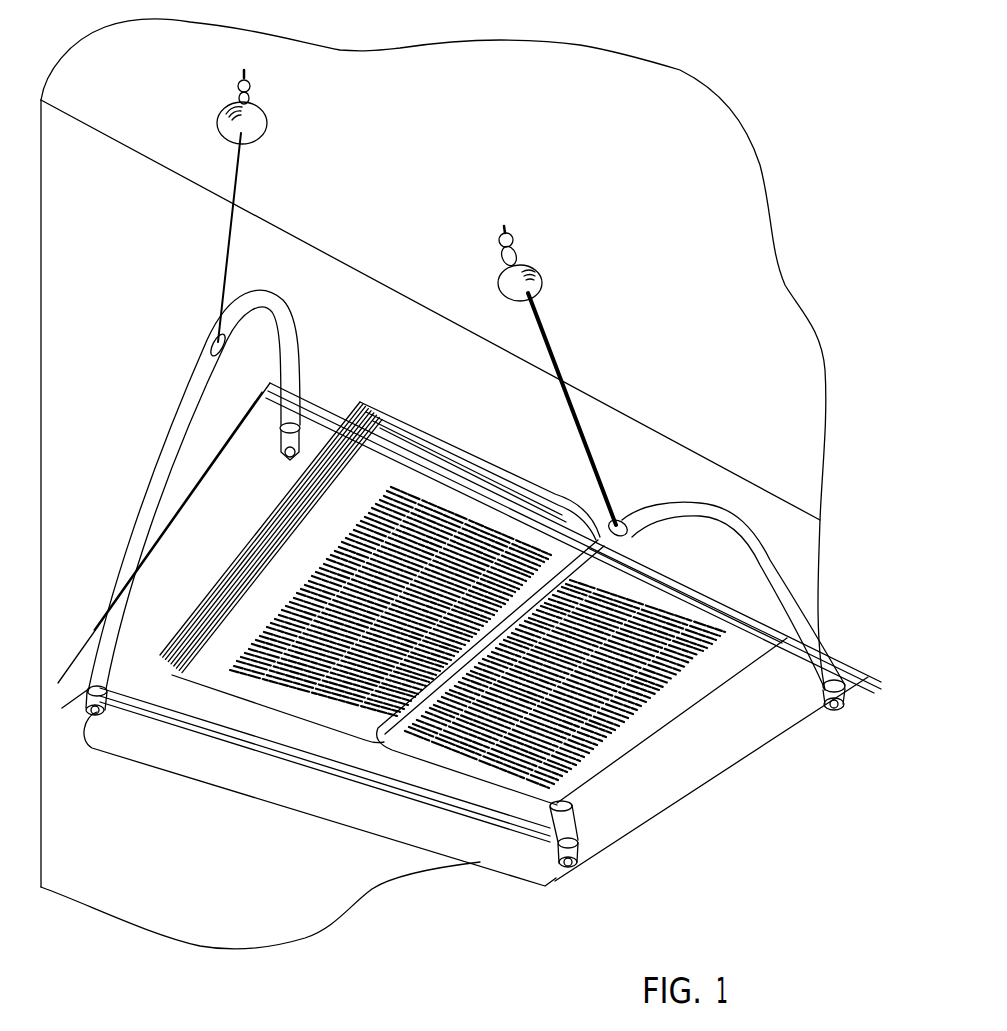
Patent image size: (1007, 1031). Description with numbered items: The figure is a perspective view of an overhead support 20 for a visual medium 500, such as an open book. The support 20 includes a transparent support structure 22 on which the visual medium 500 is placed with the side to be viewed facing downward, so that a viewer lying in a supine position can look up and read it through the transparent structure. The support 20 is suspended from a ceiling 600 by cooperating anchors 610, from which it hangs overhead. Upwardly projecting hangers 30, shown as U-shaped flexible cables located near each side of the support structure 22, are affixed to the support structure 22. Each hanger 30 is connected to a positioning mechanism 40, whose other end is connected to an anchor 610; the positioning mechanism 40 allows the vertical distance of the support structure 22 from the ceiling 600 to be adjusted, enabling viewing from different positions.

The overhead support 20 is at (678, 892).
The transparent support structure 22 is at (707, 773).
The hanger 30 is at (300, 352).
The positioning mechanism 40 is at (286, 130).
The visual medium 500 is at (423, 447).
The ceiling 600 is at (607, 86).
The anchor 610 is at (250, 90).